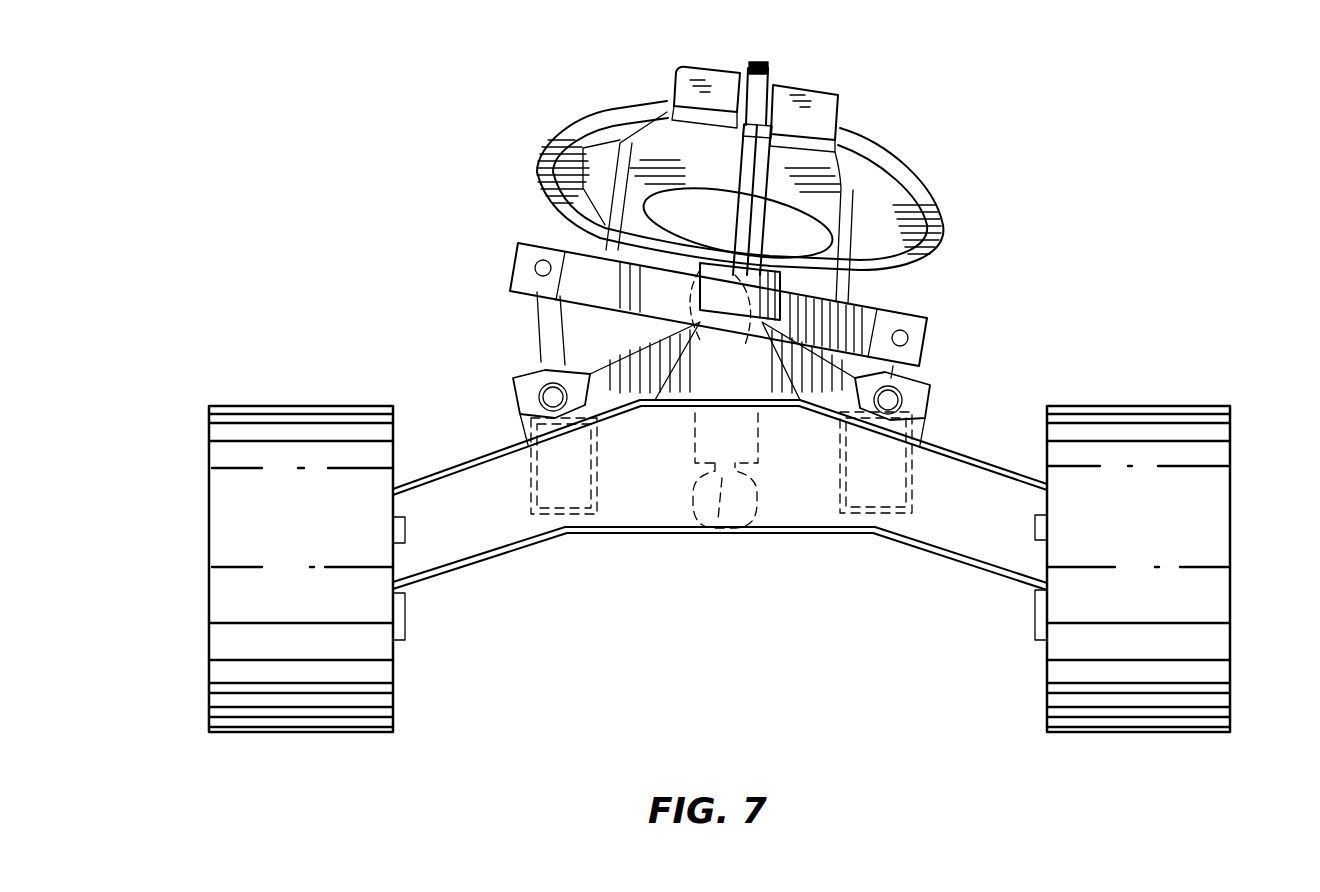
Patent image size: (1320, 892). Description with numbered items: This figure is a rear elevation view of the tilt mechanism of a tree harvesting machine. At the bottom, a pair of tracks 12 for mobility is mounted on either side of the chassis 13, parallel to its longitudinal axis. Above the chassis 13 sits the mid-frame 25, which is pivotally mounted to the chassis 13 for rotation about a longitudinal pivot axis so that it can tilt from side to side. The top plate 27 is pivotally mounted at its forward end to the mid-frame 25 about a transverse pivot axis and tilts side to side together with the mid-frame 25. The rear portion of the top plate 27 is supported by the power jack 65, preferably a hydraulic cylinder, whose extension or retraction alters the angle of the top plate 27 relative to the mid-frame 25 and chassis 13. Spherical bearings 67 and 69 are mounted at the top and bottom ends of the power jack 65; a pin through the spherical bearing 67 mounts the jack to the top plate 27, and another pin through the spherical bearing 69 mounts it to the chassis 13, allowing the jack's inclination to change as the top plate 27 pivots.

The tracks 12 is at (287, 404).
The chassis 13 is at (976, 460).
The mid-frame 25 is at (880, 302).
The top plate 27 is at (917, 182).
The power jack 65 is at (705, 345).
The spherical bearing 67 is at (778, 88).
The spherical bearing 69 is at (722, 495).